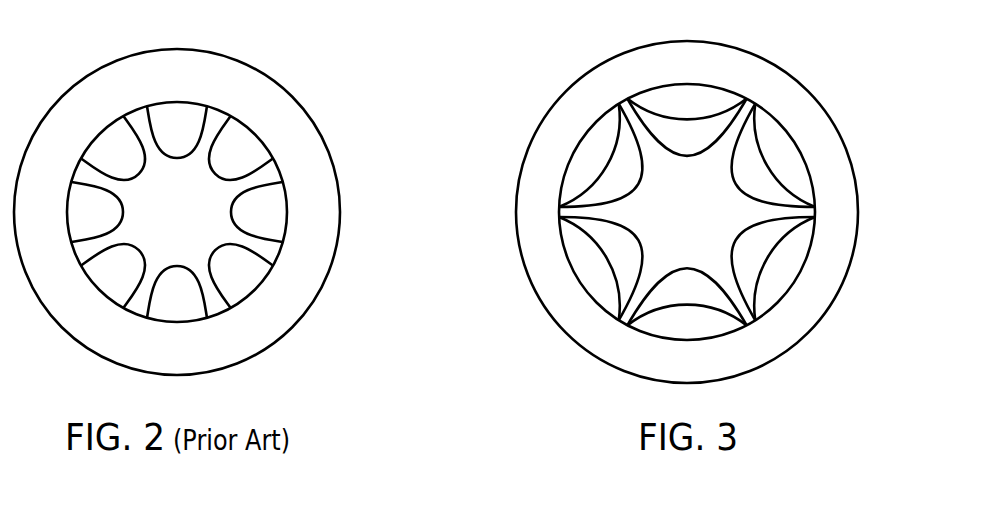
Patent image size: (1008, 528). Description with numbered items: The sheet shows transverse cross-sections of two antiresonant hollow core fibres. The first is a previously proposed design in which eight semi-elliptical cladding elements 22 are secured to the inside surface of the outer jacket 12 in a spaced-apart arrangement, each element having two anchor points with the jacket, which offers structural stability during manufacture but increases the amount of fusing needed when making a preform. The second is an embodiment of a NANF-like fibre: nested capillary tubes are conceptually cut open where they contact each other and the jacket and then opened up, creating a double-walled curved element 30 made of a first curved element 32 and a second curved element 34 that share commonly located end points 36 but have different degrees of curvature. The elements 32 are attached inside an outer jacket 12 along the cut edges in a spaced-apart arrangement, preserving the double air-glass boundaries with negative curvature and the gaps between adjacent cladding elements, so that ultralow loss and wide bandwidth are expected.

In FIG. 2, the outer jacket 12 is at (293, 328).
In FIG. 3, the outer jacket 12 is at (813, 328).
In FIG. 2, the semi-elliptical cladding element 22 is at (262, 237).
In FIG. 3, the double-walled curved element 30 is at (710, 216).
In FIG. 3, the first curved element 32 is at (643, 185).
In FIG. 3, the second curved element 34 is at (603, 177).
In FIG. 3, the commonly located end points 36 is at (806, 222).